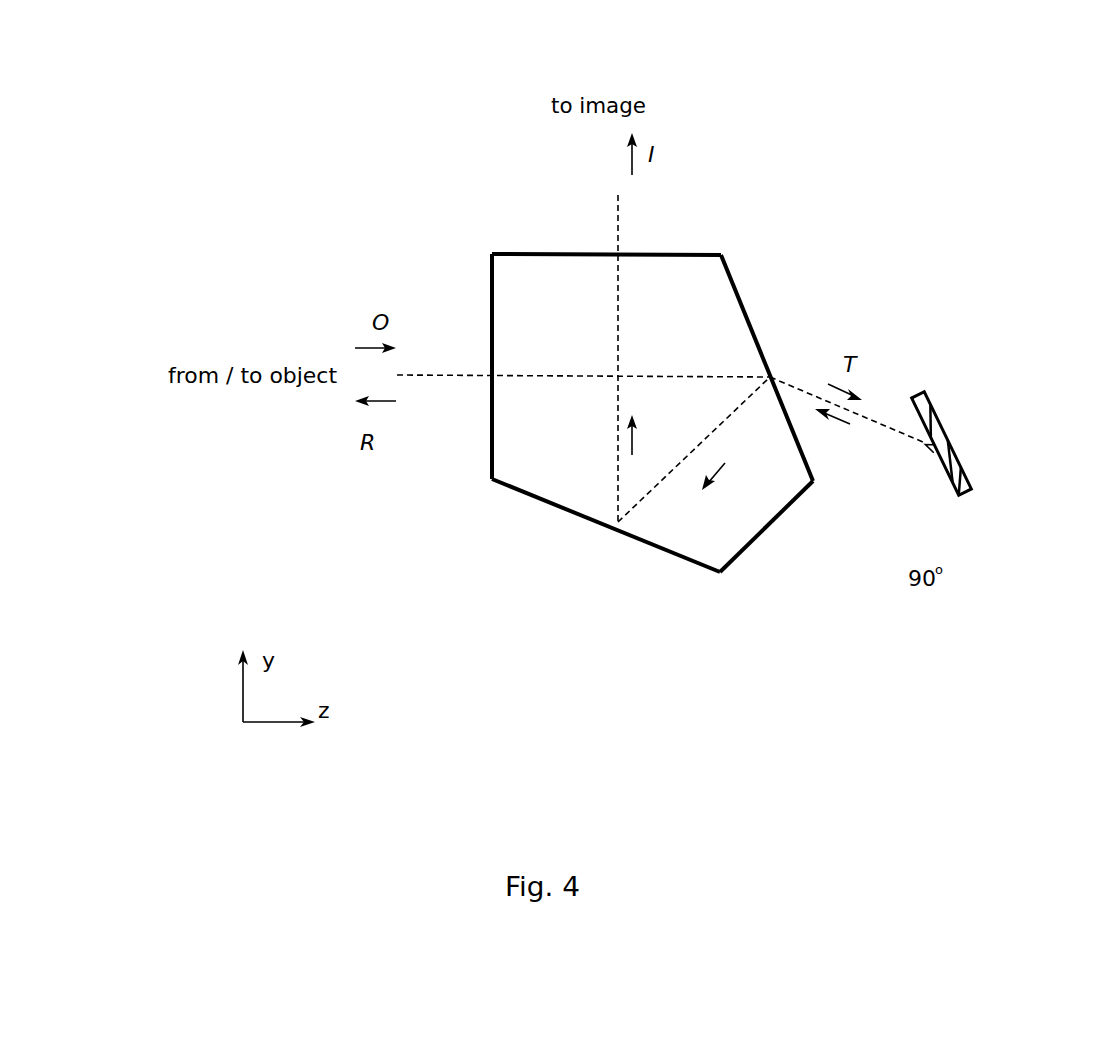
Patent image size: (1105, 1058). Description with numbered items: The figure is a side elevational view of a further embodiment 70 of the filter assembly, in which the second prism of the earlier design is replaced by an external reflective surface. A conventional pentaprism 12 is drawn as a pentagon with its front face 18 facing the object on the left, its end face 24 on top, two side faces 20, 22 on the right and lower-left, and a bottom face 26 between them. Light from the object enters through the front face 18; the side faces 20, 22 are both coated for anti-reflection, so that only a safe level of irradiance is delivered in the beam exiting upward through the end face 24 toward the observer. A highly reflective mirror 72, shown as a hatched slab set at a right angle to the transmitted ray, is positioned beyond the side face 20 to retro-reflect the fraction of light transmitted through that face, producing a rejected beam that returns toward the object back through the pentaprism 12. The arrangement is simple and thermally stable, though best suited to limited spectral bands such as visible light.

The embodiment 70 is at (450, 112).
The pentaprism 12 is at (668, 403).
The front face 18 is at (492, 470).
The side face 20 is at (745, 312).
The side face 22 is at (540, 502).
The end face 24 is at (553, 254).
The bottom face 26 is at (787, 512).
The mirror 72 is at (978, 420).